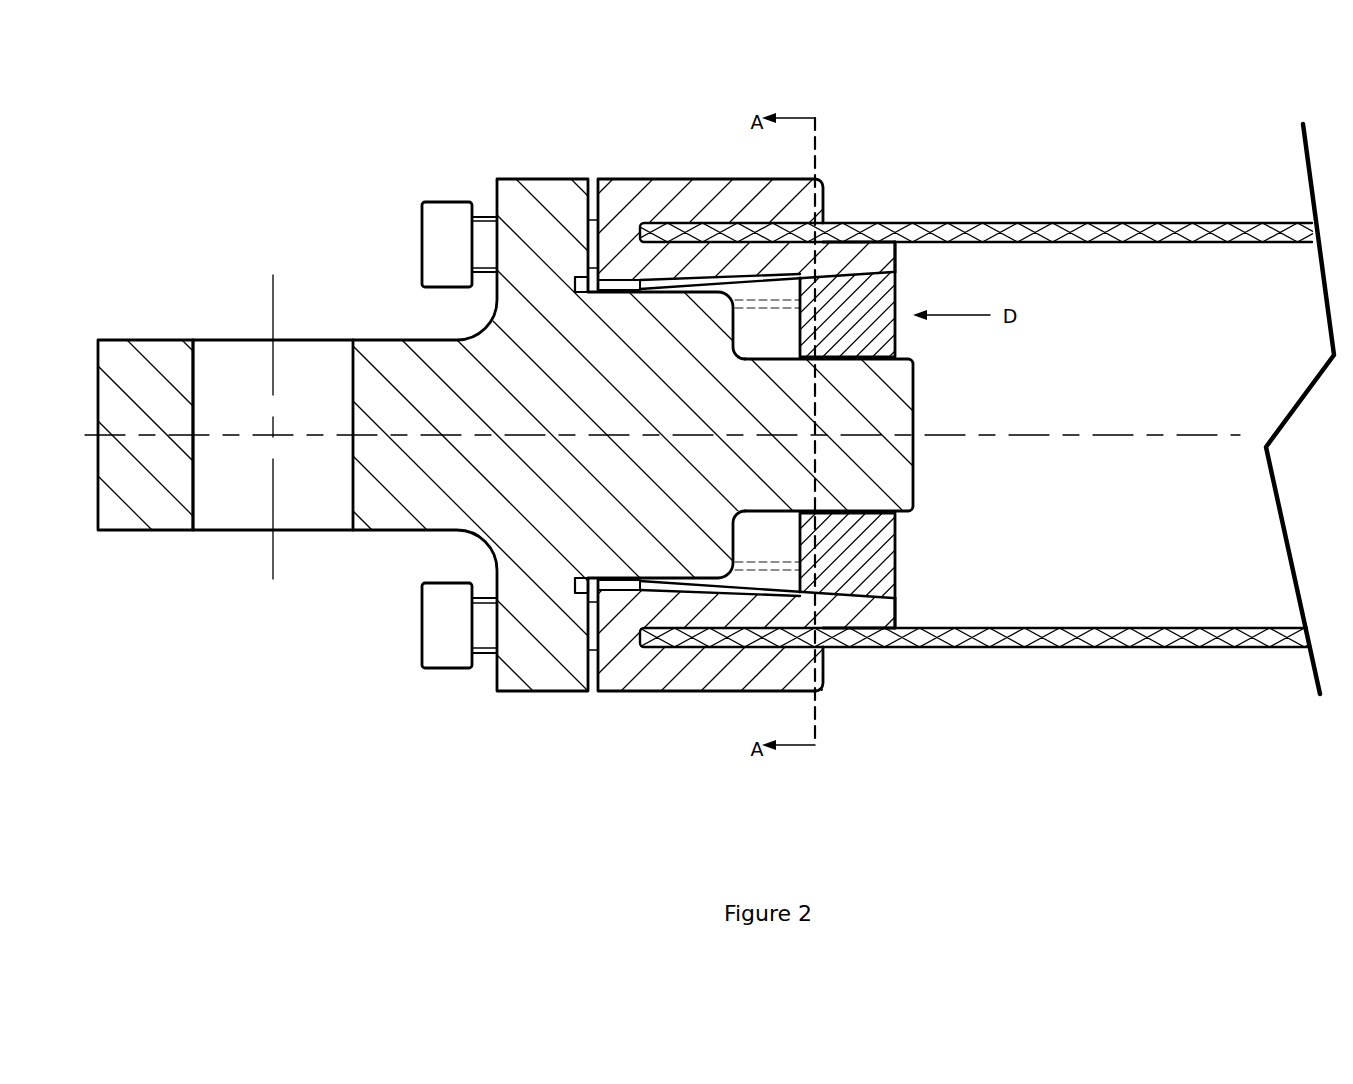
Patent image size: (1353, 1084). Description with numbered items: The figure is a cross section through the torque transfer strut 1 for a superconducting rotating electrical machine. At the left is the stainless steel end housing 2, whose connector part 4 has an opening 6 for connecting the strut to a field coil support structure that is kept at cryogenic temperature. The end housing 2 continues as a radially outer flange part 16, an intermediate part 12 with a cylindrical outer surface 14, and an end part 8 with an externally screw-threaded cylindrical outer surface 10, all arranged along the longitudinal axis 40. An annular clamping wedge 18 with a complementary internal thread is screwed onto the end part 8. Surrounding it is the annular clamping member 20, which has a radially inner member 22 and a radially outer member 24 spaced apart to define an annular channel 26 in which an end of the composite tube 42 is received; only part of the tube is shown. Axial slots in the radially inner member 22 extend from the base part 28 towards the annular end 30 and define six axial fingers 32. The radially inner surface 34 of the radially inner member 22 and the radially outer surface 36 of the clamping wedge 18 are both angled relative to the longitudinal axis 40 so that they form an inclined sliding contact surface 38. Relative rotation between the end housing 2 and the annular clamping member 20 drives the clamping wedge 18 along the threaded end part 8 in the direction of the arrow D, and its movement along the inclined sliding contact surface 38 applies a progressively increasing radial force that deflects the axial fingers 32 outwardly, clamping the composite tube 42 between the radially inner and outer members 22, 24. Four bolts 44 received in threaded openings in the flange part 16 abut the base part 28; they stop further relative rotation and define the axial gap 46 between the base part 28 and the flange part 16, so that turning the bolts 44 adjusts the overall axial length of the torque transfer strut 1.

The torque transfer strut 1 is at (252, 740).
The end housing 2 is at (406, 552).
The connector part 4 is at (160, 392).
The opening 6 is at (327, 360).
The end part 8 is at (898, 478).
The externally screw-threaded cylindrical outer surface 10 is at (822, 378).
The intermediate part 12 is at (633, 325).
The cylindrical outer surface 14 is at (650, 285).
The radially outer flange part 16 is at (542, 648).
The annular clamping wedge 18 is at (898, 285).
The annular clamping member 20 is at (686, 712).
The radially inner member 22 is at (660, 603).
The radially outer member 24 is at (667, 300).
The annular channel 26 is at (843, 640).
The base part 28 is at (620, 647).
The annular end 30 is at (897, 582).
The axial fingers 32 is at (878, 612).
The radially inner surface 34 is at (718, 585).
The radially outer surface 36 is at (862, 288).
The inclined sliding contact surface 38 is at (895, 598).
The longitudinal axis 40 is at (1150, 435).
The composite tube 42 is at (1056, 642).
The bolts 44 is at (450, 222).
The axial gap 46 is at (593, 677).